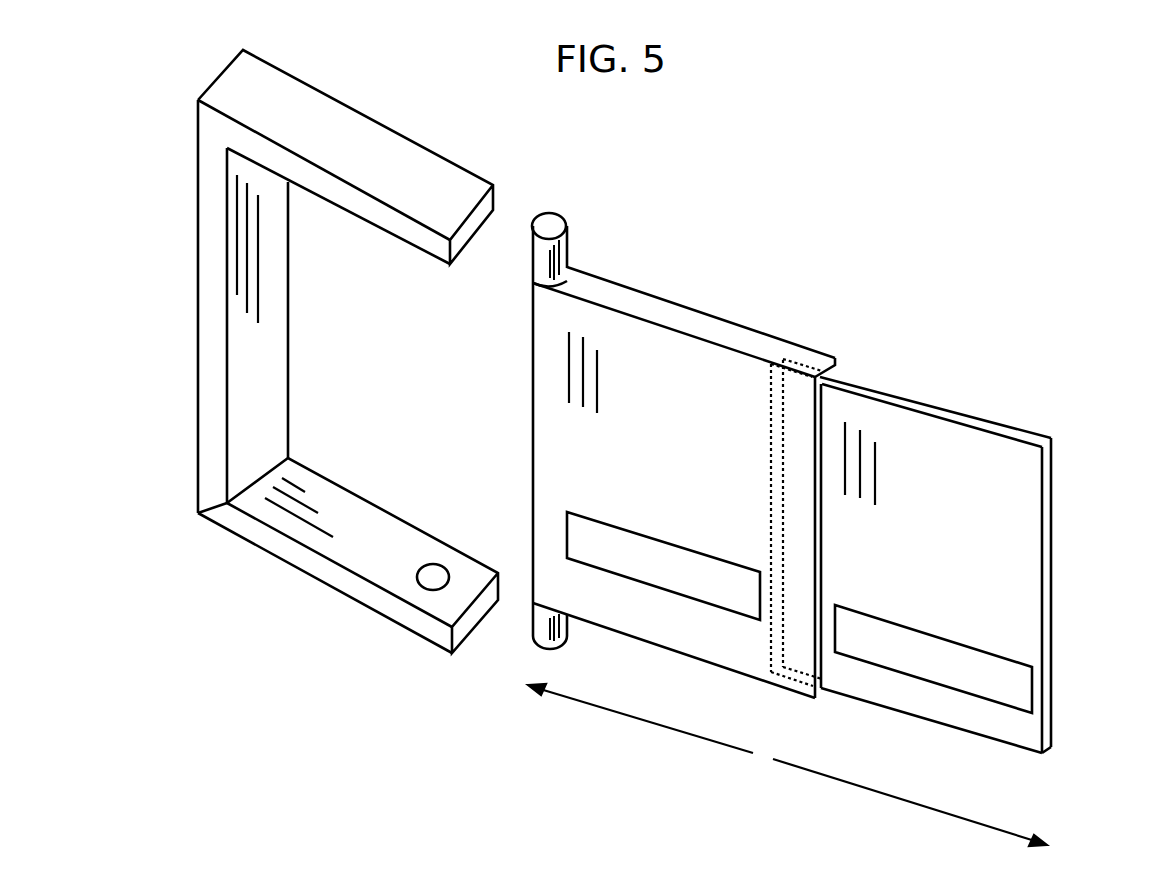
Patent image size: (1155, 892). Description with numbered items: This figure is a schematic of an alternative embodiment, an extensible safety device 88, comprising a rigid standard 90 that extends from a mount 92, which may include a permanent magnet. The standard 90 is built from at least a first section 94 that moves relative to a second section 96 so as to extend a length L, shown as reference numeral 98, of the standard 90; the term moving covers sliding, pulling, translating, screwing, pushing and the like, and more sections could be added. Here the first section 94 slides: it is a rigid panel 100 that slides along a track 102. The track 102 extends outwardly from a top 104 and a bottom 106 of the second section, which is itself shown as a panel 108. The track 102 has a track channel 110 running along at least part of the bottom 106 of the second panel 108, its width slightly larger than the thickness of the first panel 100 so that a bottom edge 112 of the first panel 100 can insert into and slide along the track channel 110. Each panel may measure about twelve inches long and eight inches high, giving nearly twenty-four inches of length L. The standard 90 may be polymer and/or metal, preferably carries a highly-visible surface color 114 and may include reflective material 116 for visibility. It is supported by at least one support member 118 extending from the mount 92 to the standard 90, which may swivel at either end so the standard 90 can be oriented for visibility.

The extensible safety device 88 is at (942, 197).
The rigid standard 90 is at (790, 342).
The mount 92 is at (381, 137).
The first section 94 is at (726, 505).
The second section 96 is at (967, 569).
The length L 98 is at (833, 778).
The rigid panel 100 is at (1047, 505).
The track 102 is at (837, 378).
The top 104 is at (735, 323).
The bottom 106 is at (683, 657).
The second panel 108 is at (595, 288).
The track channel 110 is at (837, 375).
The bottom edge 112 is at (1048, 752).
The surface color 114 is at (682, 454).
The reflective material 116 is at (566, 526).
The support member 118 is at (318, 568).